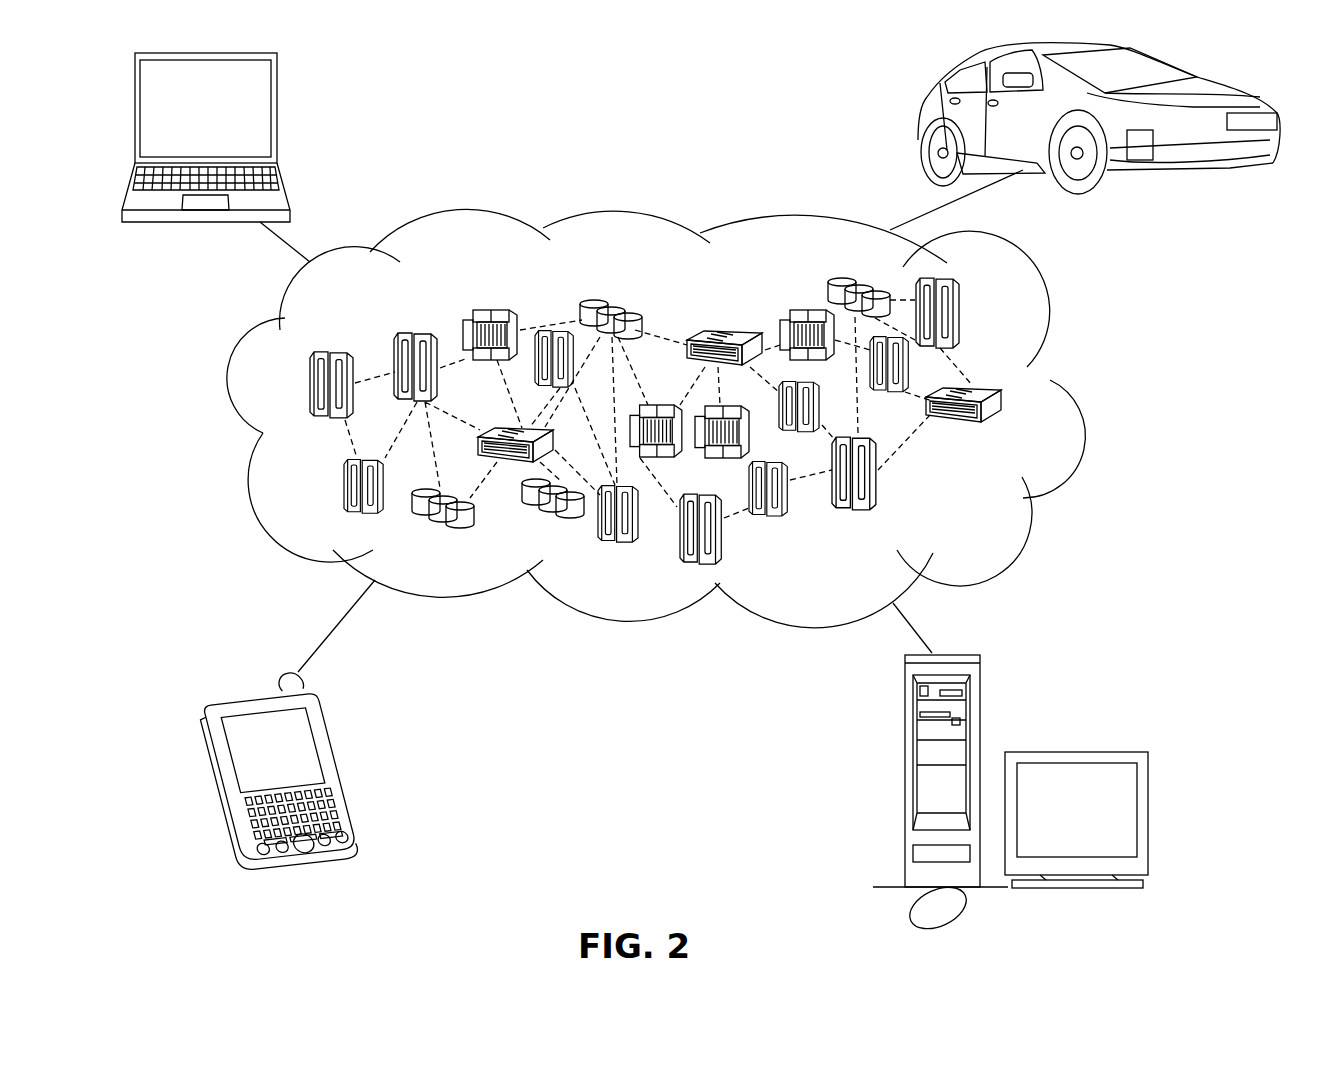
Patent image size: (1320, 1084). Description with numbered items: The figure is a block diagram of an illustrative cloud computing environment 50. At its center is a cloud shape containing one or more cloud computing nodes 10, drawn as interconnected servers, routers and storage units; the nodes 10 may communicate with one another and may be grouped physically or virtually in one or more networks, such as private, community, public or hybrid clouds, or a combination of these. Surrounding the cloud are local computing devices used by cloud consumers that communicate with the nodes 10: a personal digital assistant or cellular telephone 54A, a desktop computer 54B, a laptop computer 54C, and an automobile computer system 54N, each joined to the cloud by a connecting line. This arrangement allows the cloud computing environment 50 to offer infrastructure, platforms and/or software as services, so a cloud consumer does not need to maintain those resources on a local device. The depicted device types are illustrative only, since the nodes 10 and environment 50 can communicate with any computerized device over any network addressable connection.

The cloud computing nodes 10 is at (979, 502).
The cloud computing environment 50 is at (1073, 400).
The personal digital assistant (PDA) or cellular telephone 54A is at (332, 730).
The desktop computer 54B is at (903, 715).
The laptop computer 54C is at (278, 92).
The automobile computer system 54N is at (918, 110).